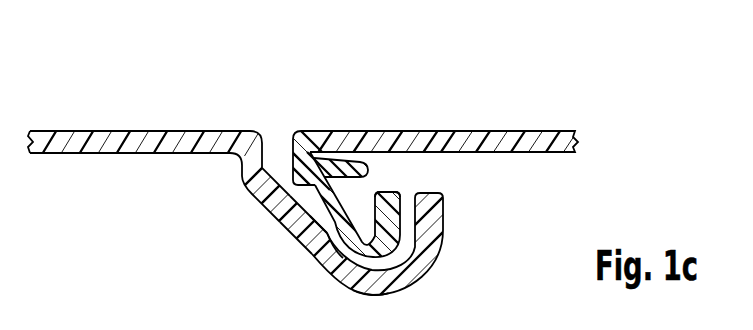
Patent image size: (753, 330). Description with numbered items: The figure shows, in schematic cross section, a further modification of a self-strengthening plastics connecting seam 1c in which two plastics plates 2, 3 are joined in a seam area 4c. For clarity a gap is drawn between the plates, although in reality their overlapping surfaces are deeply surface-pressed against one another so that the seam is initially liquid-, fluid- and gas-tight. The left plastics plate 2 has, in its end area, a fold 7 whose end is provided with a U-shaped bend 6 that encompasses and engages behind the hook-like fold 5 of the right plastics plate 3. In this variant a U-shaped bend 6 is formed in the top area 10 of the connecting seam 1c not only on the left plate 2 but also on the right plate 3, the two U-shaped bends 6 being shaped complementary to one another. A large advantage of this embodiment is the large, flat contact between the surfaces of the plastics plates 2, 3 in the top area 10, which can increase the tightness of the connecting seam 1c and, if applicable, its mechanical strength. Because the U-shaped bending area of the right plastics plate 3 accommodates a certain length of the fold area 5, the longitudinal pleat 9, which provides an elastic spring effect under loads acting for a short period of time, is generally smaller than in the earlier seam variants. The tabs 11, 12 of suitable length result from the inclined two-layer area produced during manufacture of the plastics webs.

The plastics connecting seam 1c is at (558, 96).
The plastics plate 2 is at (156, 140).
The plastics plate 3 is at (464, 140).
The seam area 4c is at (282, 100).
The hook-like fold 5 is at (301, 142).
The U-shaped bend 6 is at (396, 207).
The fold 7 is at (233, 187).
The pleat 9 is at (357, 170).
The top area 10 is at (452, 243).
The tab 11 is at (326, 263).
The tab 12 is at (327, 242).